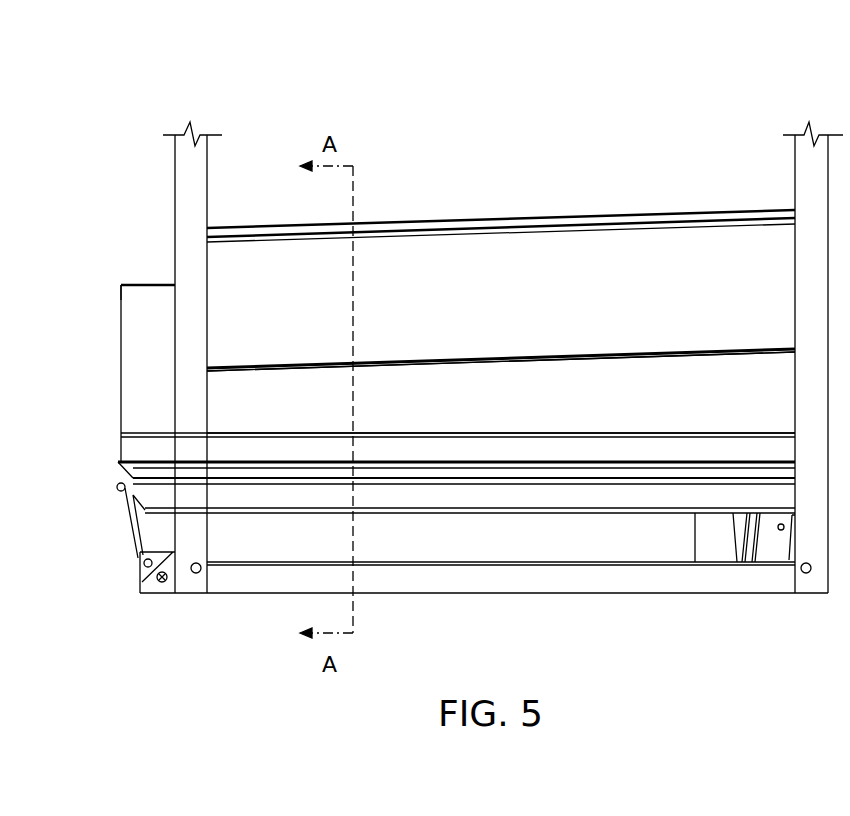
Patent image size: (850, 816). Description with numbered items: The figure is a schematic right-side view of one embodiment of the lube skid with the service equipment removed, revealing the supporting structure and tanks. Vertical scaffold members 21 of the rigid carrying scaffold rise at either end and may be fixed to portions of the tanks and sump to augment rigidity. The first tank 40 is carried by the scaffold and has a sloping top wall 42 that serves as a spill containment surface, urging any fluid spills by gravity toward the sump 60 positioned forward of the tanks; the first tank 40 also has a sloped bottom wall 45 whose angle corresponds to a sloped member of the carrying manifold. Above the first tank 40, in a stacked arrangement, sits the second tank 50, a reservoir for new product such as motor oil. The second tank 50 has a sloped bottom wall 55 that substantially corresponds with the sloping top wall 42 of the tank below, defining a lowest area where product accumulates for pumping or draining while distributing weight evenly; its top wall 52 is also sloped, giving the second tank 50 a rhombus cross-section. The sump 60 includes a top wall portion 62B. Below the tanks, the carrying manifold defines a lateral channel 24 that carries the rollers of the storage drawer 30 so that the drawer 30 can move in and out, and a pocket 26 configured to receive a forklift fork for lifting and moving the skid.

The vertical scaffold member 21 is at (185, 182).
The top wall portion of sump 62B is at (146, 284).
The sump 60 is at (160, 351).
The second tank 50 is at (515, 303).
The top wall of second tank 52 is at (668, 233).
The bottom wall of second tank 55 is at (765, 348).
The first tank 40 is at (538, 408).
The sloping top wall of first tank 42 is at (683, 357).
The sloped bottom wall of first tank 45 is at (770, 432).
The pocket 26 is at (450, 453).
The lateral channel 24 is at (668, 492).
The storage drawer 30 is at (543, 551).